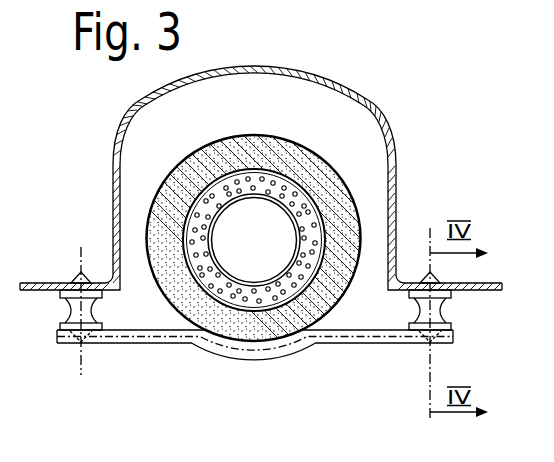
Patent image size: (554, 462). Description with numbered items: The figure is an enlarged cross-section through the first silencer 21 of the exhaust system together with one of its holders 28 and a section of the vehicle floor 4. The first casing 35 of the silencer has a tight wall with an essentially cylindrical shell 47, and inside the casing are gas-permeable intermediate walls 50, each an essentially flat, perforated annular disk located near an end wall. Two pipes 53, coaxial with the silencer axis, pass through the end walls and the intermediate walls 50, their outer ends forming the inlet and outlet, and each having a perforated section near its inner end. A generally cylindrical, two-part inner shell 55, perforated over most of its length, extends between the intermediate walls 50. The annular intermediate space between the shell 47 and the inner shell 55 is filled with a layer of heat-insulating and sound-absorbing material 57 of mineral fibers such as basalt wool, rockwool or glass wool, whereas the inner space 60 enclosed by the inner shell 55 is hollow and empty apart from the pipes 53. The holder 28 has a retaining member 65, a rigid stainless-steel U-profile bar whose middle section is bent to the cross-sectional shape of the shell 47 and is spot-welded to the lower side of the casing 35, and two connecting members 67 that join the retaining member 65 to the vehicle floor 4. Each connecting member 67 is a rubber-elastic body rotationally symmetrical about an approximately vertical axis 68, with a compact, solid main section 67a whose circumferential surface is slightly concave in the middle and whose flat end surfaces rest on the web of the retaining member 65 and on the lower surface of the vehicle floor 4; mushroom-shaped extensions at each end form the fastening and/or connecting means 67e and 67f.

The vehicle floor 4 is at (38, 283).
The first silencer 21 is at (183, 157).
The first casing 35 is at (273, 131).
The shell 47 is at (315, 158).
The intermediate wall 50 is at (208, 330).
The pipe 53 is at (245, 283).
The inner shell 55 is at (281, 287).
The heat-insulating and sound-absorbing material 57 is at (306, 337).
The inner space 60 is at (284, 325).
The retaining member 65 is at (148, 344).
The holder 28 is at (57, 338).
The connecting member 67 is at (65, 305).
The main section 67a is at (448, 318).
The fastening and/or connecting means 67e is at (437, 341).
The fastening and/or connecting means 67f is at (440, 285).
The axis 68 is at (80, 271).